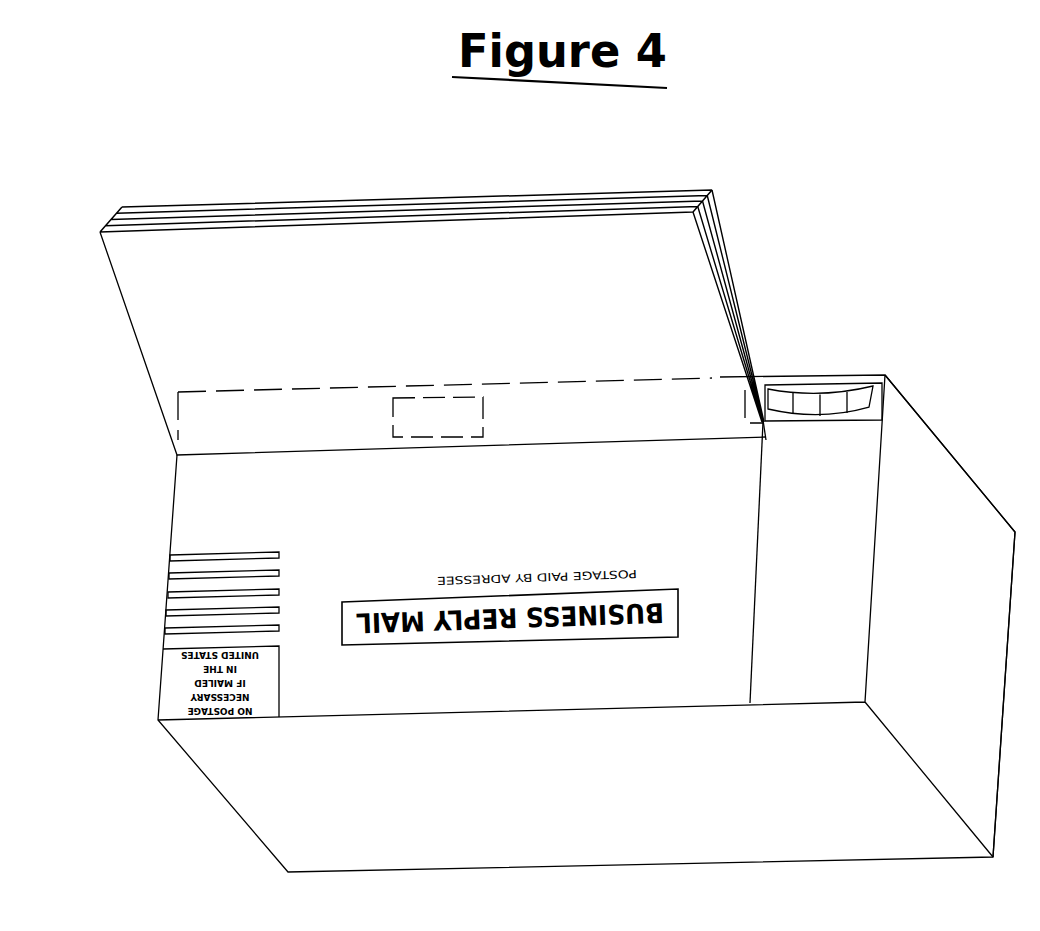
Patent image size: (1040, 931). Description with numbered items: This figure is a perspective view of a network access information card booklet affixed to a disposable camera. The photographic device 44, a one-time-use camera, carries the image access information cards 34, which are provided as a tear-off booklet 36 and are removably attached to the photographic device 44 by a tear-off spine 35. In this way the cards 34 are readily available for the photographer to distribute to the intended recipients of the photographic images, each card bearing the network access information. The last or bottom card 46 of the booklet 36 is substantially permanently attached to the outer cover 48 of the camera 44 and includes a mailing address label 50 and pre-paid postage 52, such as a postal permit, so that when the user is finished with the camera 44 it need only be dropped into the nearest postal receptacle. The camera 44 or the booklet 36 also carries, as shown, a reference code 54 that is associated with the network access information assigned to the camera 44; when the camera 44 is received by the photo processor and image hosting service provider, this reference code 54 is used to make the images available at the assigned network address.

The network access information cards 34 is at (717, 198).
The tear-off spine 35 is at (765, 437).
The tear-off booklet 36 is at (423, 210).
The photographic device 44 is at (913, 409).
The bottom card 46 is at (760, 522).
The outer cover 48 is at (853, 553).
The mailing address label 50 is at (480, 520).
The pre-paid postage 52 is at (257, 567).
The reference code 54 is at (687, 678).